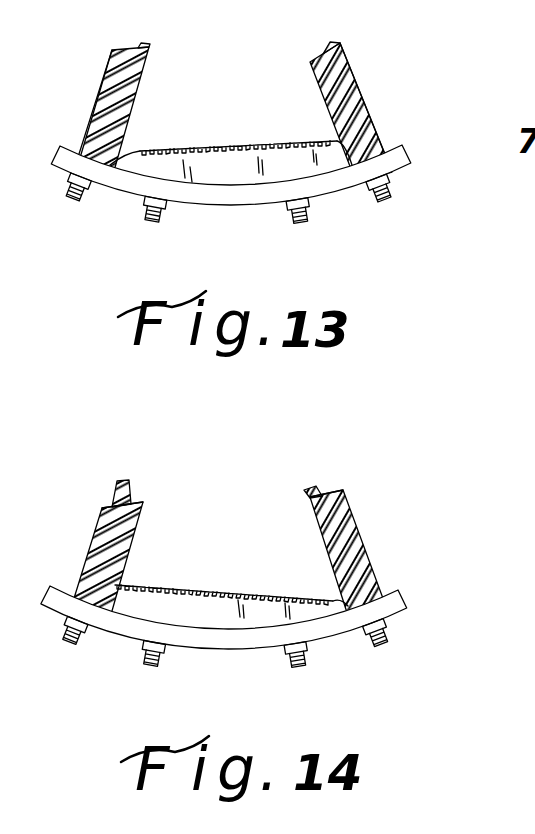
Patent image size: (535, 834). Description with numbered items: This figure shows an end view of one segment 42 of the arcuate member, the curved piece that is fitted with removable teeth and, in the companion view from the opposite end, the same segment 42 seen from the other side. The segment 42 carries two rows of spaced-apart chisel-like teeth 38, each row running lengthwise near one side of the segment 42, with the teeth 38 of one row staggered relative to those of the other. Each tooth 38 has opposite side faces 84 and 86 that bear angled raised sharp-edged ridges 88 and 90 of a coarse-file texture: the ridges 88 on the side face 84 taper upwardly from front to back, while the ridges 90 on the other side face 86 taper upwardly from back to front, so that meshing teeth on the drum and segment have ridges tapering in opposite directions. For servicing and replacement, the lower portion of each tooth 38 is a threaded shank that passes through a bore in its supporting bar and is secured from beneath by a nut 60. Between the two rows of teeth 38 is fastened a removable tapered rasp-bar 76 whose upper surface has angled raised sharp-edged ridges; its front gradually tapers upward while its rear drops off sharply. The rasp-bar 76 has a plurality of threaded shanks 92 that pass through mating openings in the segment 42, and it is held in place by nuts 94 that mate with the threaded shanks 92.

In FIG. 13, the tooth 38 is at (112, 51).
In FIG. 14, the tooth 38 is at (90, 543).
In FIG. 13, the side face 84 is at (103, 85).
In FIG. 13, the ridges 88 is at (140, 83).
In FIG. 13, the rasp-bar 76 is at (230, 152).
In FIG. 14, the rasp-bar 76 is at (205, 610).
In FIG. 13, the segment 42 is at (123, 182).
In FIG. 14, the segment 42 is at (127, 623).
In FIG. 13, the threaded shanks 92 is at (290, 220).
In FIG. 14, the threaded shanks 92 is at (287, 663).
In FIG. 13, the nuts 94 is at (310, 206).
In FIG. 14, the nuts 94 is at (303, 645).
In FIG. 14, the ridges 90 is at (113, 503).
In FIG. 14, the side face 86 is at (318, 488).
In FIG. 14, the nut 60 is at (383, 623).